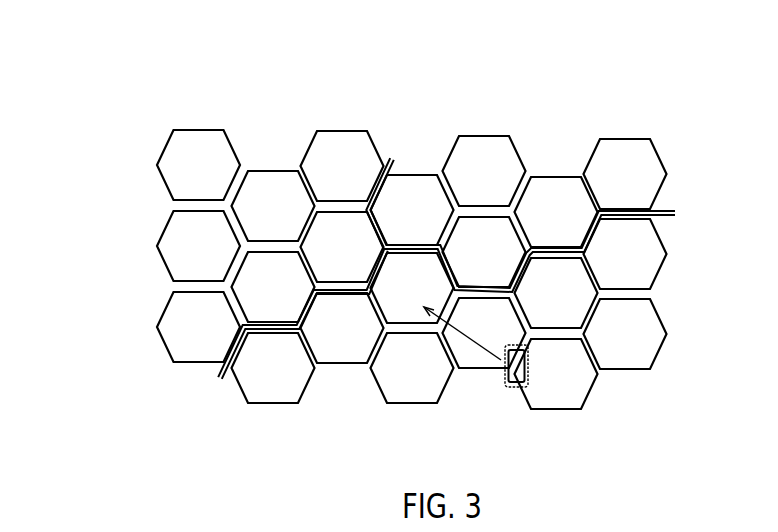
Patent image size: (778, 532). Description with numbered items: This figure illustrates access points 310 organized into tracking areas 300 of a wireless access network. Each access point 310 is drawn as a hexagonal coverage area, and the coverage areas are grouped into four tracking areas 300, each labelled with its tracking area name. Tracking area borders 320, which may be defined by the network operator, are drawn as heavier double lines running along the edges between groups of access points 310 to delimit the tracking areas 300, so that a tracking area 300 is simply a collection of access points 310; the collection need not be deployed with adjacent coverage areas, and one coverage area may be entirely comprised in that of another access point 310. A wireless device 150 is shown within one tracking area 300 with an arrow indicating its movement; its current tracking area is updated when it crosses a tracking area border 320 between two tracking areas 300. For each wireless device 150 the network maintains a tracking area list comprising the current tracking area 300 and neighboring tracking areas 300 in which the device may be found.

The tracking areas 300 is at (125, 64).
The access points 310 is at (338, 130).
The tracking area borders 320 is at (393, 163).
The wireless device 150 is at (512, 388).